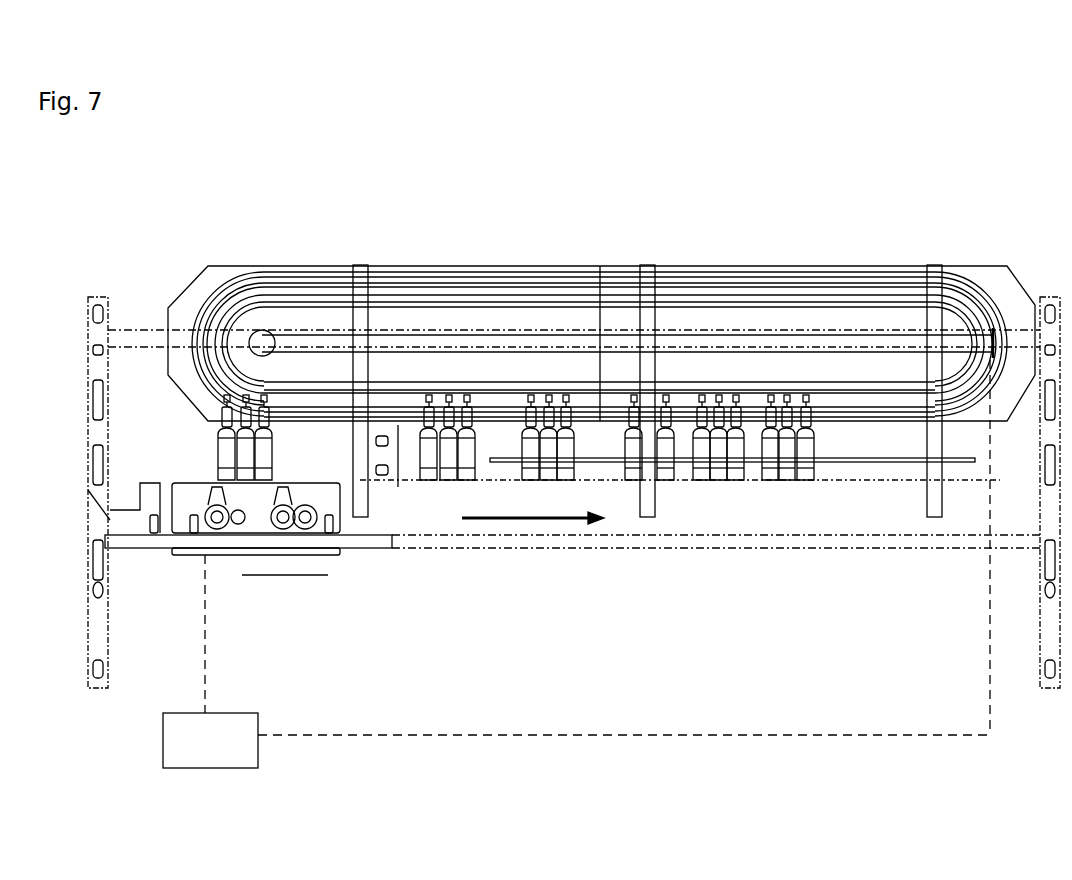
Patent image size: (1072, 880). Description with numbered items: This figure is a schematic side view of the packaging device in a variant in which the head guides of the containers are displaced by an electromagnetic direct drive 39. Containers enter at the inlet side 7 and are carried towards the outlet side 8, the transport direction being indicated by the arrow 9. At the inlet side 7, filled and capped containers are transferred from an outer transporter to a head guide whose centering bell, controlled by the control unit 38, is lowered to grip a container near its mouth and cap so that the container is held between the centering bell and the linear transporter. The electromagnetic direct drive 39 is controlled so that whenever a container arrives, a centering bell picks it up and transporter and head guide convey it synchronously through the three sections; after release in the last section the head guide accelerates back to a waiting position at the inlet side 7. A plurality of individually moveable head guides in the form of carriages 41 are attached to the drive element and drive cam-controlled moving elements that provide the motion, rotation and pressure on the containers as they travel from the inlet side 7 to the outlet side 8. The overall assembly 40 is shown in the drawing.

The inlet side 7 is at (117, 492).
The outlet side 8 is at (1034, 492).
The arrow 9 is at (533, 507).
The control unit 38 is at (221, 754).
The electromagnetic direct drive 39 is at (773, 287).
The apparatus 40 is at (260, 222).
The carriages 41 is at (803, 400).